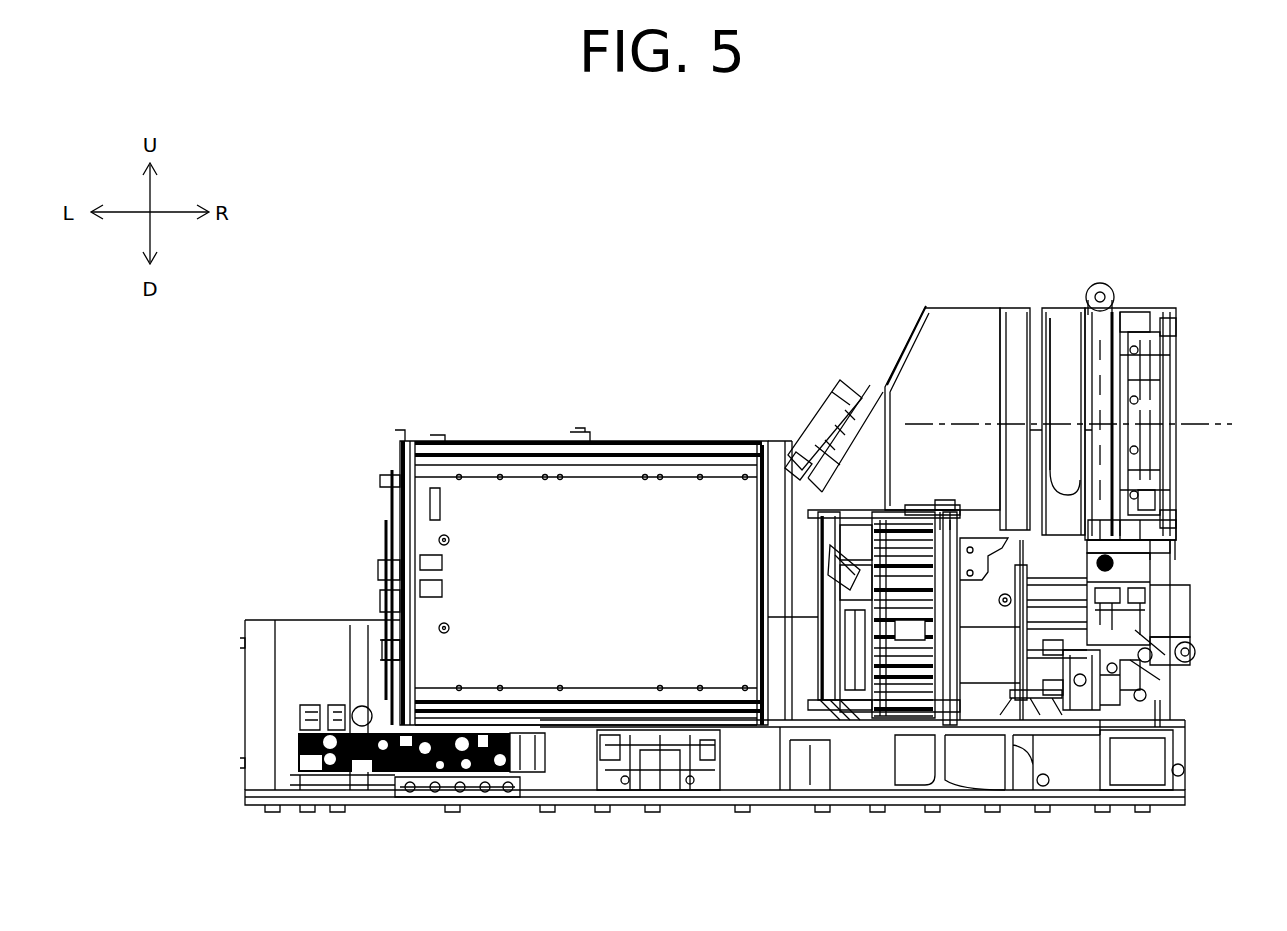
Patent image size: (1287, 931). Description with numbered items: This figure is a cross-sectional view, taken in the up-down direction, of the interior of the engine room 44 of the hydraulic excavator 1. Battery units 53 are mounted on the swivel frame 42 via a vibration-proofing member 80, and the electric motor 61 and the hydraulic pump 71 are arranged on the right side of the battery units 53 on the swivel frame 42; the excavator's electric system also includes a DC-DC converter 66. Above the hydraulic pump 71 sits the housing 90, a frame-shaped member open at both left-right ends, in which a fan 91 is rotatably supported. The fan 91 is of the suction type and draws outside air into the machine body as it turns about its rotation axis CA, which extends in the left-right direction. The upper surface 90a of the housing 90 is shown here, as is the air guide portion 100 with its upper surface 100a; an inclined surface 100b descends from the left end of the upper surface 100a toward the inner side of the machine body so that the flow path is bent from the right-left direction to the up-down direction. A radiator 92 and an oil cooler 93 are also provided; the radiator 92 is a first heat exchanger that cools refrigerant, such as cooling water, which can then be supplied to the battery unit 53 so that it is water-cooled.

The hydraulic excavator 1 is at (400, 262).
The swivel frame 42 is at (380, 800).
The engine room 44 is at (432, 385).
The battery unit 53 is at (551, 620).
The electric motor 61 is at (890, 705).
The DC-DC converter 66 is at (830, 437).
The hydraulic pump 71 is at (1137, 632).
The vibration-proofing member 80 is at (648, 775).
The housing 90 is at (1045, 305).
The upper surface of housing 90a is at (1063, 306).
The fan 91 is at (1150, 398).
The radiator 92 is at (1173, 358).
The oil cooler 93 is at (1101, 287).
The air guide portion 100 is at (905, 323).
The upper surface of air guide portion 100a is at (962, 306).
The inclined surface 100b is at (890, 365).
The rotation axis CA is at (1087, 427).